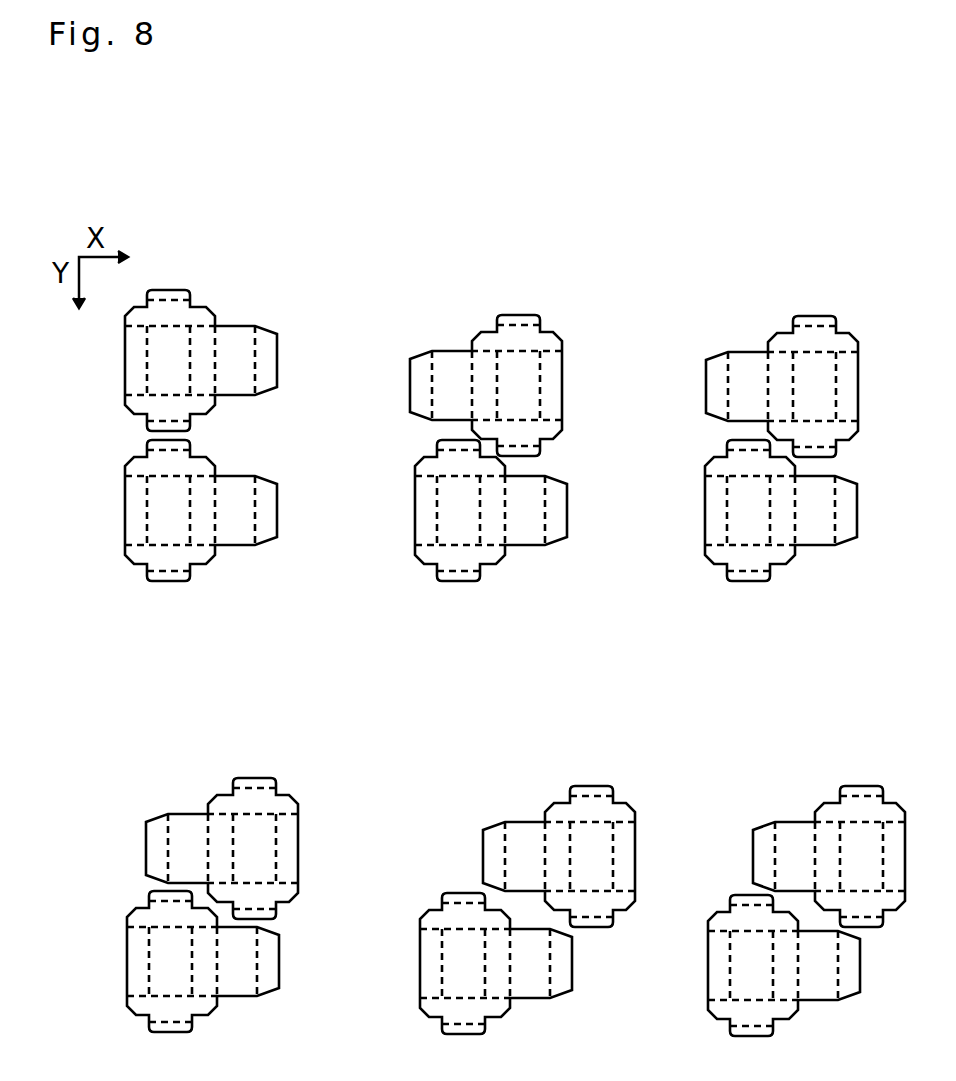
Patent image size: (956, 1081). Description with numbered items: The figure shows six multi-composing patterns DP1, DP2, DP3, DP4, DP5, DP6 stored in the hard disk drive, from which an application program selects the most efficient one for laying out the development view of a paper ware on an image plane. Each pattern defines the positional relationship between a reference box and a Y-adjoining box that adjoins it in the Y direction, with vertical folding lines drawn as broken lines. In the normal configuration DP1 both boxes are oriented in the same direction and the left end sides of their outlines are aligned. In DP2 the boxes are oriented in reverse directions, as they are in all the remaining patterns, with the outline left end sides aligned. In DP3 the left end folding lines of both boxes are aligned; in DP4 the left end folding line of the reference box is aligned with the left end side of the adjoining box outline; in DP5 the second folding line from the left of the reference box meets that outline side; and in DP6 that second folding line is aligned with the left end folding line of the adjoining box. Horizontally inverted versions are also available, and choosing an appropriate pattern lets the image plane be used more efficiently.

The multi-composing pattern DP1 is at (230, 245).
The multi-composing pattern DP2 is at (515, 245).
The multi-composing pattern DP3 is at (812, 245).
The multi-composing pattern DP4 is at (235, 750).
The multi-composing pattern DP5 is at (523, 750).
The multi-composing pattern DP6 is at (822, 753).